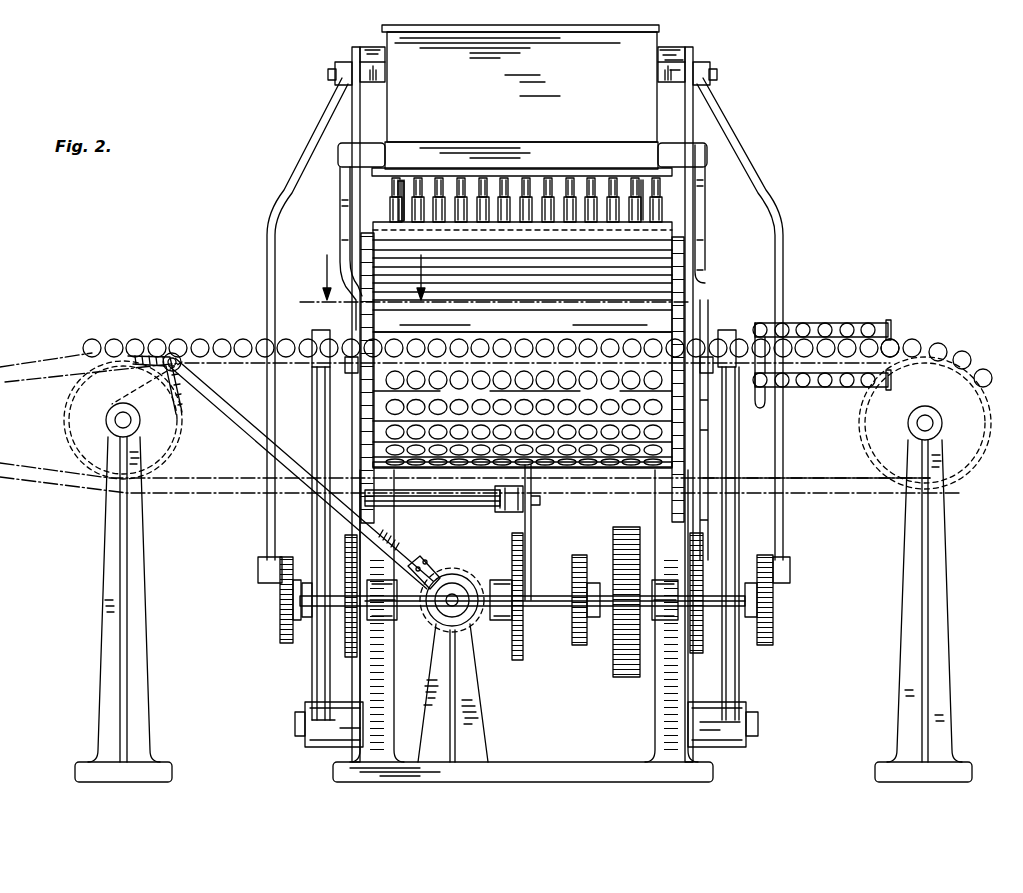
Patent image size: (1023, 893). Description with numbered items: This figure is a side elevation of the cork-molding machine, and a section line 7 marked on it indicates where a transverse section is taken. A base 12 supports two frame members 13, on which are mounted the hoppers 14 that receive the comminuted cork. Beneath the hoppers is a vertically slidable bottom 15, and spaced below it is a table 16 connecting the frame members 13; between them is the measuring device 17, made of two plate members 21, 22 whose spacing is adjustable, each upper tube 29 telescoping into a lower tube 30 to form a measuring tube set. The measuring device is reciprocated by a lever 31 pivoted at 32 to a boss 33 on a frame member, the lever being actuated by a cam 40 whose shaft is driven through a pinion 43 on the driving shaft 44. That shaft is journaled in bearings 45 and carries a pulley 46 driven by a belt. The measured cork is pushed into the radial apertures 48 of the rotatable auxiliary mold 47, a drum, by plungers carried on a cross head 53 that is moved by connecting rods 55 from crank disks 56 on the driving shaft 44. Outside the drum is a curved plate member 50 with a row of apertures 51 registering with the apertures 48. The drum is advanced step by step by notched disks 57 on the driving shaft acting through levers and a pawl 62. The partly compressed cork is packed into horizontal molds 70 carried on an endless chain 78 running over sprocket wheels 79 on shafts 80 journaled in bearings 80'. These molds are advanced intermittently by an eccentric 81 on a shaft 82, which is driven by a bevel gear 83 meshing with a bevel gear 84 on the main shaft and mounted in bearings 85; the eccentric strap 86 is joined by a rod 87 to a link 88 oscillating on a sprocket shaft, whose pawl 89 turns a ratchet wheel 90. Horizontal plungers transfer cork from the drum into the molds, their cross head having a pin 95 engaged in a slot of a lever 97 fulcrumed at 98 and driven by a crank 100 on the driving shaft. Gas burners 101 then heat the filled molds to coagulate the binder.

The section line 7- 7 is at (370, 277).
The base 12 is at (575, 764).
The frame members 13 is at (393, 534).
The hoppers 14 is at (520, 83).
The bottom 15 is at (615, 146).
The table 16 is at (662, 226).
The measuring device 17 is at (391, 200).
The plate member 21 is at (622, 178).
The plate member 22 is at (370, 223).
The tube 29 is at (508, 202).
The tube 30 is at (512, 187).
The lever 31 is at (532, 521).
The pivot 32 is at (497, 506).
The boss 33 is at (454, 506).
The cam 40 is at (512, 544).
The pinion 43 is at (579, 556).
The driving shaft 44 is at (550, 596).
The bearings 45 is at (392, 620).
The pulley 46 is at (618, 662).
The auxiliary mold 47 is at (675, 306).
The radial apertures 48 is at (545, 411).
The curved plate member 50 is at (663, 321).
The apertures 51 is at (546, 343).
The cross head 53 is at (673, 57).
The connecting rods 55 is at (268, 269).
The crank disks 56 is at (280, 629).
The disks 57 is at (343, 650).
The pawl 62 is at (708, 462).
The molds 70 is at (893, 343).
The endless chain 78 is at (808, 481).
The sprocket wheels 79 is at (864, 419).
The shafts 80 is at (513, 413).
The bearings 80' is at (522, 609).
The eccentric 81 is at (448, 588).
The shaft 82 is at (457, 598).
The bevel gear 83 is at (473, 622).
The bevel gear 84 is at (425, 693).
The bearings 85 is at (467, 662).
The strap 86 is at (442, 572).
The rod 87 is at (240, 414).
The link 88 is at (134, 391).
The pawl 89 is at (183, 373).
The ratchet wheel 90 is at (181, 410).
The pin 95 is at (338, 341).
The lever 97 is at (320, 420).
The fulcrum 98 is at (295, 723).
The crank 100 is at (306, 582).
The gas burners 101 is at (838, 323).